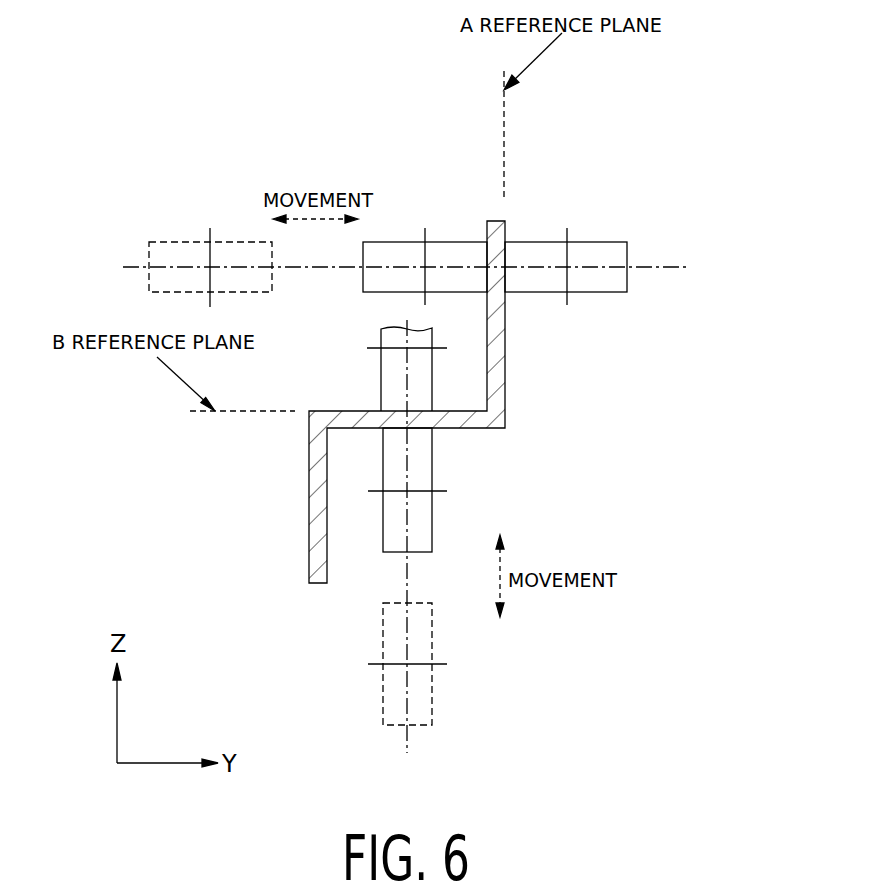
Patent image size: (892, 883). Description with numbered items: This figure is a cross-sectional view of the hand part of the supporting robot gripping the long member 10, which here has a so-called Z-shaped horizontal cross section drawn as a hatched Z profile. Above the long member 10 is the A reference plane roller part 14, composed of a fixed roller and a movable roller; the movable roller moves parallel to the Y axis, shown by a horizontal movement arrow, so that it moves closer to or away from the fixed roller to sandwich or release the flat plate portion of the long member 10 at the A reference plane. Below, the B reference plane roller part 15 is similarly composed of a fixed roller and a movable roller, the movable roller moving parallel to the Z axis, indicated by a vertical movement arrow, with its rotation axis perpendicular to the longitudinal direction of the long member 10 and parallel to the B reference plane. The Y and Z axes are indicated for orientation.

The long member 10 is at (505, 355).
The A reference plane roller part 14 is at (382, 226).
The B reference plane roller part 15 is at (435, 526).